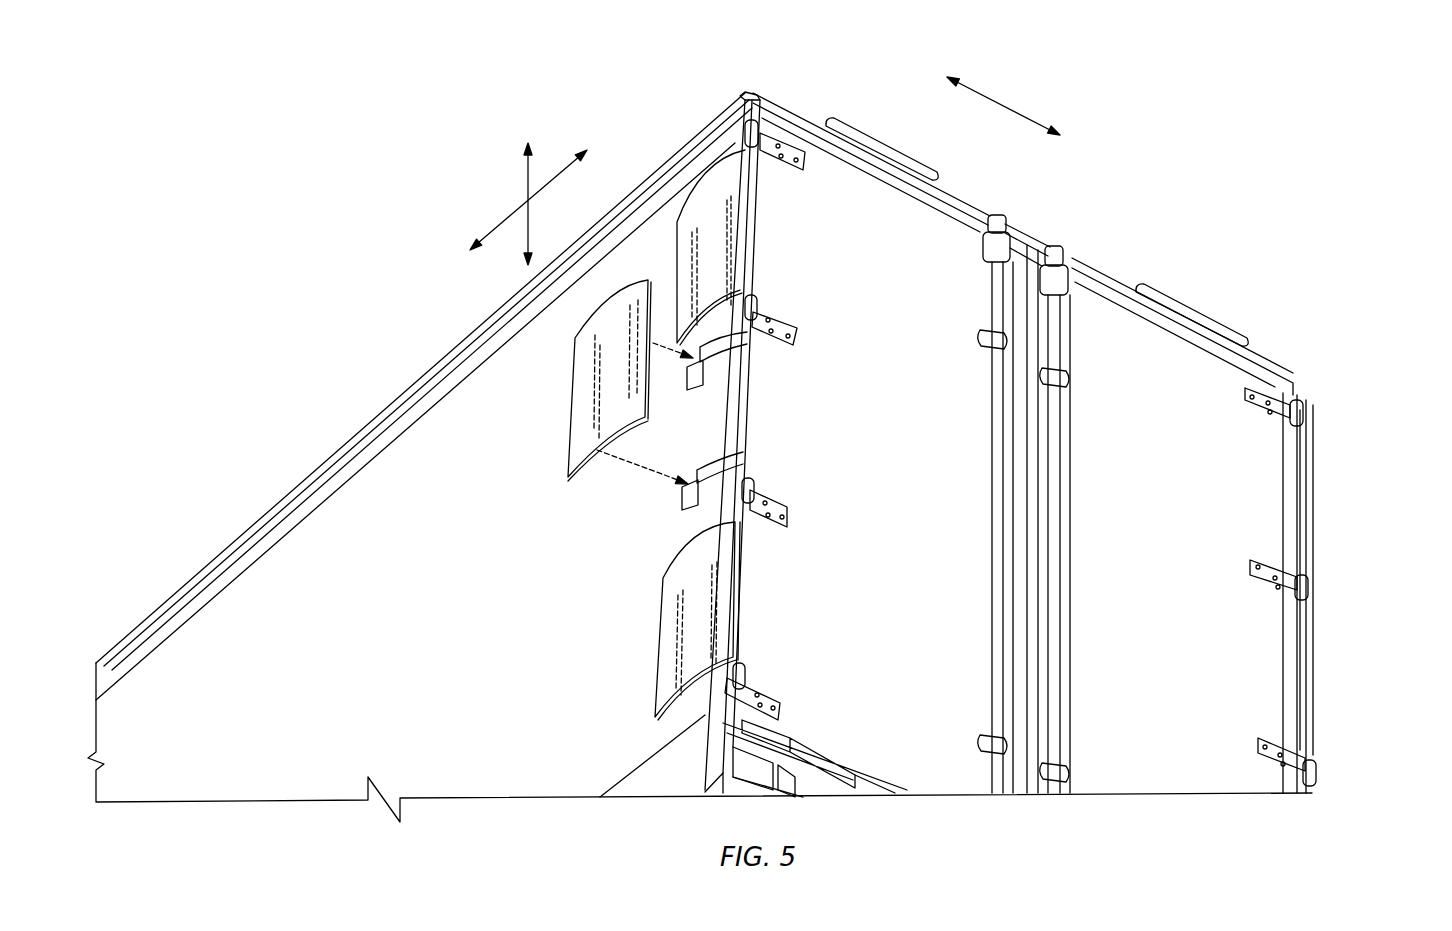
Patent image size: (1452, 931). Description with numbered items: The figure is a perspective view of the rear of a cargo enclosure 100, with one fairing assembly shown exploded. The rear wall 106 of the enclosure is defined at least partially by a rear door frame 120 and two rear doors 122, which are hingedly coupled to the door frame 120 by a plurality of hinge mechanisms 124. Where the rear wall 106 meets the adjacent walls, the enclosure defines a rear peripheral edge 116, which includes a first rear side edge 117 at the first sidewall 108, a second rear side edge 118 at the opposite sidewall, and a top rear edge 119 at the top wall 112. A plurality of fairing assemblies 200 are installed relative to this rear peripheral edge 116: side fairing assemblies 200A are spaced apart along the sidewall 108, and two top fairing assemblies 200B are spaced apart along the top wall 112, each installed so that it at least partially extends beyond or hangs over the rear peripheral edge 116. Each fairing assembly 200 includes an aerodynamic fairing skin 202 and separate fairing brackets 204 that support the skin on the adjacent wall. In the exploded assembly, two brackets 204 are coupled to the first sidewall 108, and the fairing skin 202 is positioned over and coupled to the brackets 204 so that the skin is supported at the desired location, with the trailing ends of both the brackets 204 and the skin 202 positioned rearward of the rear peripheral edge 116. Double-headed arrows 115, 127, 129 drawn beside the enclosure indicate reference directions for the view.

The cargo enclosure 100 is at (770, 452).
The rear wall 106 is at (1122, 740).
The first sidewall 108 is at (307, 758).
The top wall 112 is at (413, 385).
The lateral direction 115 is at (500, 225).
The rear peripheral edge 116 is at (996, 443).
The first rear side edge 117 is at (733, 513).
The second rear side edge 118 is at (1308, 608).
The top rear edge 119 is at (967, 200).
The rear door frame 120 is at (740, 397).
The rear door 122 is at (902, 753).
The hinge mechanism 124 is at (763, 145).
The vertical direction 127 is at (525, 170).
The longitudinal direction 129 is at (1000, 103).
The fairing assembly 200 is at (941, 393).
The side fairing assembly 200A is at (688, 218).
The top fairing assembly 200B is at (885, 140).
The fairing skin 202 is at (603, 385).
The fairing bracket 204 is at (728, 348).